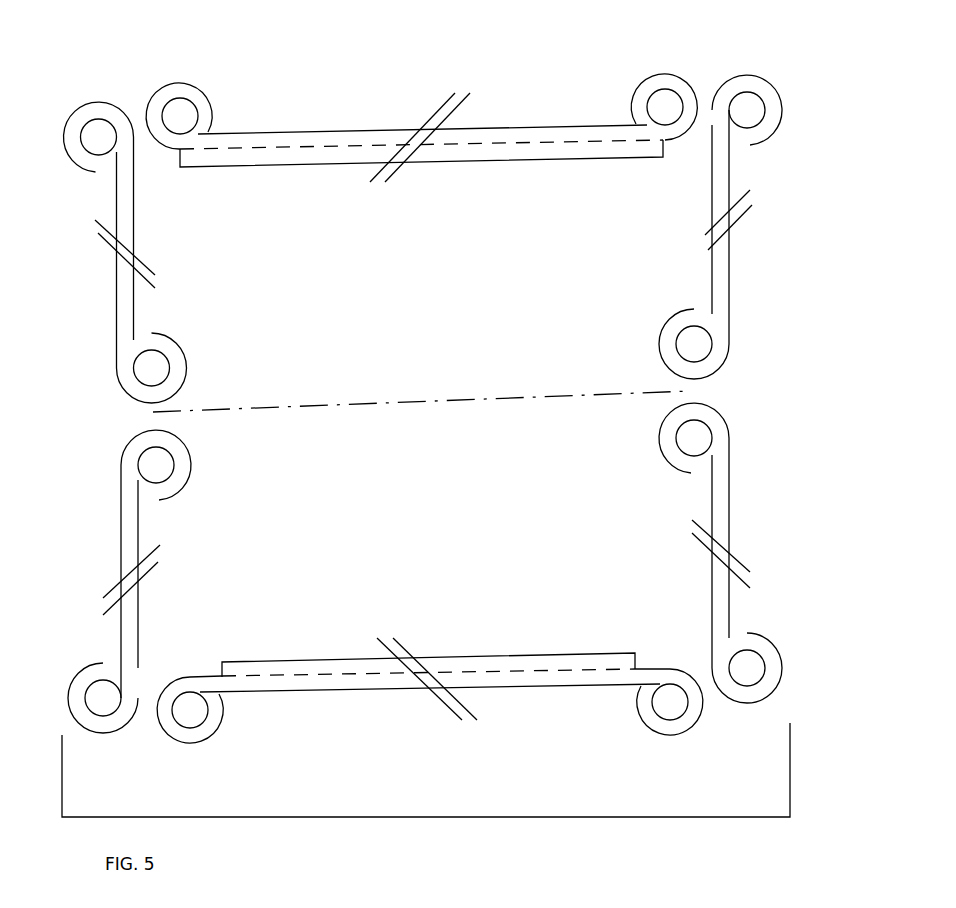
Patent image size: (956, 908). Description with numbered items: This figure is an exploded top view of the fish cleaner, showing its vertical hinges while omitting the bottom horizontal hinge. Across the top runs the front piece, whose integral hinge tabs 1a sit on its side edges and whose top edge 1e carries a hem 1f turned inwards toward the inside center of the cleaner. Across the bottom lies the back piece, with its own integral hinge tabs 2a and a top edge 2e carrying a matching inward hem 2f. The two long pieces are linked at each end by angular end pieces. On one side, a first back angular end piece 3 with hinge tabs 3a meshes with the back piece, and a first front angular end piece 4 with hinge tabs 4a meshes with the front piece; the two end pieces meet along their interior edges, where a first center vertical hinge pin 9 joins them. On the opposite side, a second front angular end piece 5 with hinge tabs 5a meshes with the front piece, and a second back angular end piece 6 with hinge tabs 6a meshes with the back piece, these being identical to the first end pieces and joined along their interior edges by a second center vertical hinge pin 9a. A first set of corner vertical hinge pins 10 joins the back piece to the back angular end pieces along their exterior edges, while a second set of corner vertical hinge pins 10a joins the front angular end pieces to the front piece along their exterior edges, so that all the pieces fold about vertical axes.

The integral hinge tabs 1a is at (200, 105).
The top edge 1e is at (380, 147).
The hem 1f is at (289, 155).
The integral hinge tabs 2a is at (212, 720).
The top edge 2e is at (515, 673).
The hem 2f is at (362, 667).
The first back angular end piece 3 is at (723, 595).
The hinge tabs 3a is at (670, 452).
The first front angular end piece 4 is at (720, 302).
The hinge tabs 4a is at (757, 80).
The second front angular end piece 5 is at (130, 598).
The hinge tabs 5a is at (170, 483).
The second back angular end piece 6 is at (127, 313).
The hinge tabs 6a is at (90, 112).
The first center vertical hinge pin 9 is at (155, 368).
The second center vertical hinge pin 9a is at (692, 345).
The first set of corner vertical hinge pins 10 is at (98, 137).
The second set of corner vertical hinge pins 10a is at (663, 108).